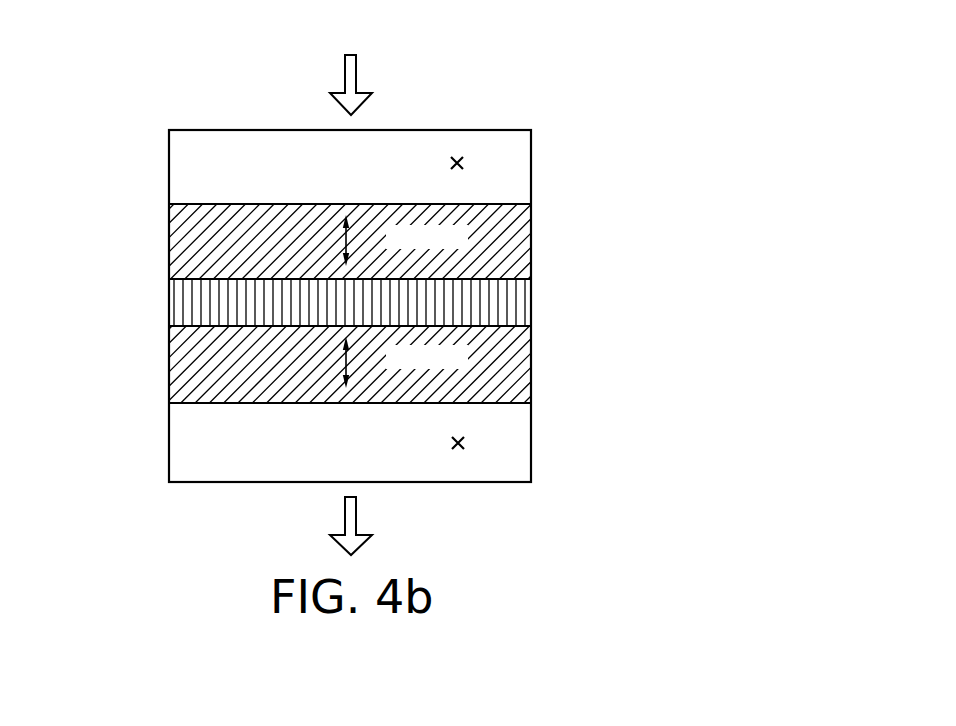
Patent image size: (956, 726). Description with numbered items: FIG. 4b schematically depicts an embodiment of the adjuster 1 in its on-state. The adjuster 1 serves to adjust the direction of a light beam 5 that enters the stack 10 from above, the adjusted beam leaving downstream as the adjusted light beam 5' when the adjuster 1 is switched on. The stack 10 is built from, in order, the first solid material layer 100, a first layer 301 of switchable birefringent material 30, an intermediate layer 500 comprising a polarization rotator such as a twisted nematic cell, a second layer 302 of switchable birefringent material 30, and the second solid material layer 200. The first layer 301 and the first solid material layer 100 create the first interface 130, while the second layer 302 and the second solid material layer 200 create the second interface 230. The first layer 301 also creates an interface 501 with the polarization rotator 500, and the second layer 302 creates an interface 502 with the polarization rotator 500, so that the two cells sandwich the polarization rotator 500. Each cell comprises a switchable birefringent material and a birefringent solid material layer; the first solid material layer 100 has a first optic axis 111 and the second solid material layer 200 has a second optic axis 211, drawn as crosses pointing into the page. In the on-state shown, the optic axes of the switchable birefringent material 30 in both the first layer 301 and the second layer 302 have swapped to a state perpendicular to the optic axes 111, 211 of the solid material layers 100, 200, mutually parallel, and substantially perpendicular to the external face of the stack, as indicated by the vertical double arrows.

The adjuster 1 is at (118, 90).
The stack 10 is at (545, 108).
The first solid material layer 100 is at (175, 168).
The first optic axis 111 is at (451, 163).
The first interface 130 is at (505, 204).
The switchable birefringent material 30 is at (175, 228).
The first layer of switchable birefringent material 301 is at (175, 257).
The second layer of switchable birefringent material 302 is at (175, 380).
The intermediate layer 500 is at (175, 303).
The interface 501 is at (505, 279).
The interface 502 is at (505, 326).
The second interface 230 is at (505, 403).
The second solid material layer 200 is at (175, 443).
The second optic axis 211 is at (452, 444).
The light beam 5 is at (329, 85).
The adjusted light beam 5' is at (327, 526).